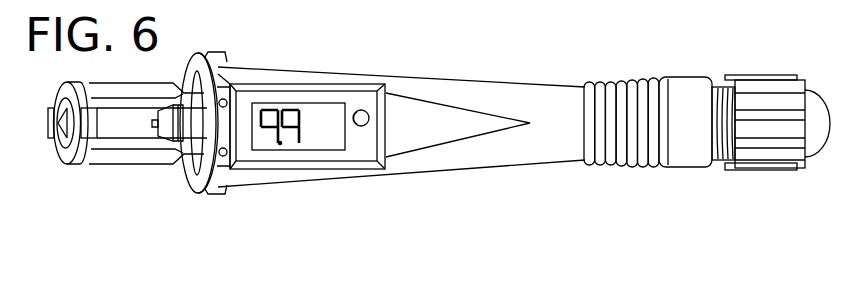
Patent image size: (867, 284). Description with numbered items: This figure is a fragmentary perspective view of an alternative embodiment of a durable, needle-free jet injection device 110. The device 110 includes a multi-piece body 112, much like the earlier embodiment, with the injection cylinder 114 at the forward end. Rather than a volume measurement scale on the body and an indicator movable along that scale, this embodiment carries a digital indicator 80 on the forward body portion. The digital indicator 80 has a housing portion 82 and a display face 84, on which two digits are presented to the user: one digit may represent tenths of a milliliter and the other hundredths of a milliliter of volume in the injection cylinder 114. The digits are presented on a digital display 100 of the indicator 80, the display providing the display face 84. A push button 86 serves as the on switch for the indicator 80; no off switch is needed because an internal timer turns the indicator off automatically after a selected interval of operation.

The digital indicator 80 is at (341, 78).
The housing portion 82 is at (333, 165).
The display face 84 is at (243, 155).
The push button 86 is at (362, 109).
The digital display 100 is at (307, 160).
The needle-free jet injection device 110 is at (488, 201).
The multi-piece body 112 is at (550, 150).
The injection cylinder 114 is at (102, 158).